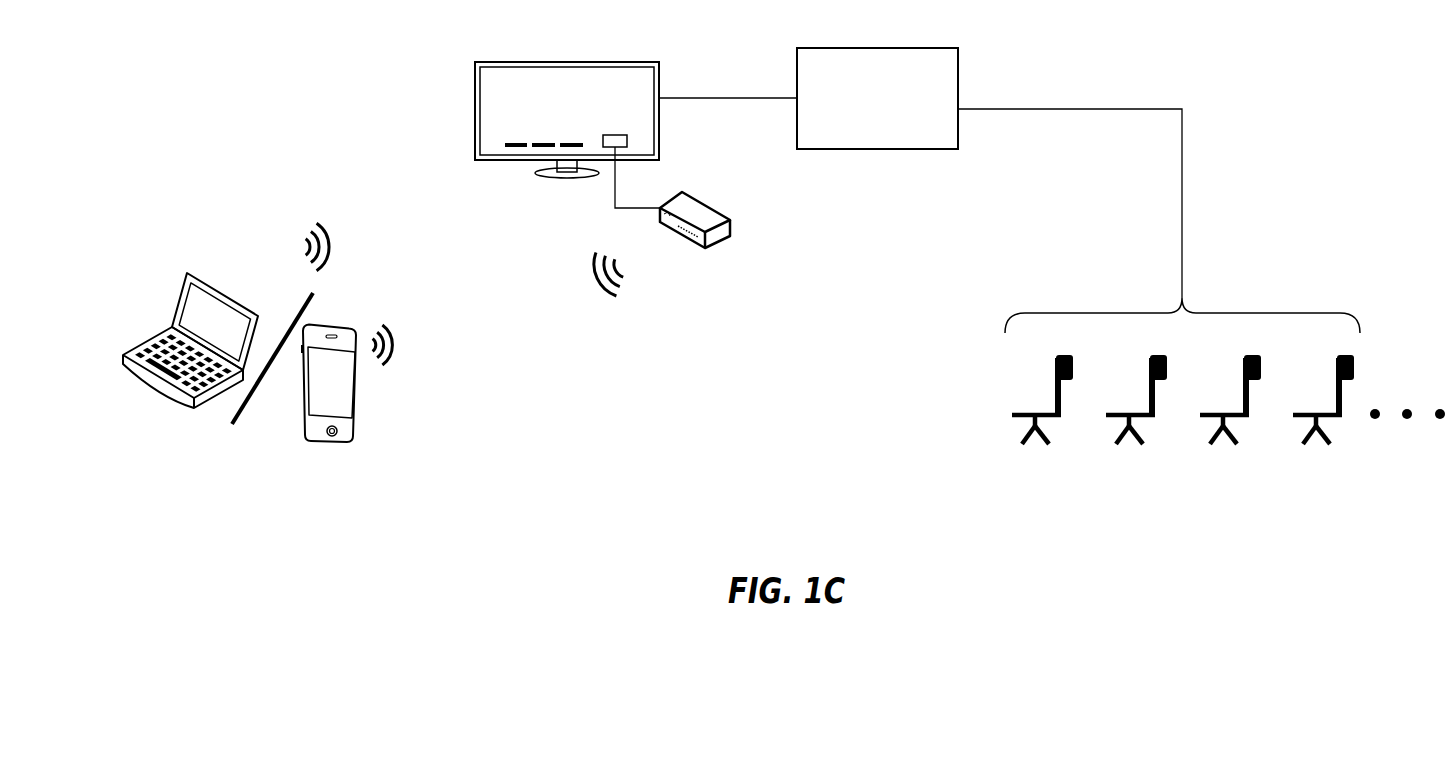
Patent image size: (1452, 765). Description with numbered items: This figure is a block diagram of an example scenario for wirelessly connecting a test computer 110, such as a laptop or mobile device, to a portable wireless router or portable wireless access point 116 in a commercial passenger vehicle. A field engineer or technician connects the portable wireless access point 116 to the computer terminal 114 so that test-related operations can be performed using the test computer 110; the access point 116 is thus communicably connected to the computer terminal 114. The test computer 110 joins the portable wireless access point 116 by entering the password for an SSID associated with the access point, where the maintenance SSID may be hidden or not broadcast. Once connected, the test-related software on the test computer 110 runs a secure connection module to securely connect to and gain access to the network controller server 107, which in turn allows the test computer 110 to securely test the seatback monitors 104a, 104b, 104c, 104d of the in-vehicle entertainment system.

The seatback monitor 104a is at (1042, 416).
The seatback monitor 104b is at (1136, 416).
The seatback monitor 104c is at (1230, 416).
The seatback monitor 104d is at (1323, 416).
The network controller server 107 is at (958, 88).
The test computer 110 is at (237, 292).
The computer terminal 114 is at (588, 62).
The portable wireless access point 116 is at (696, 196).